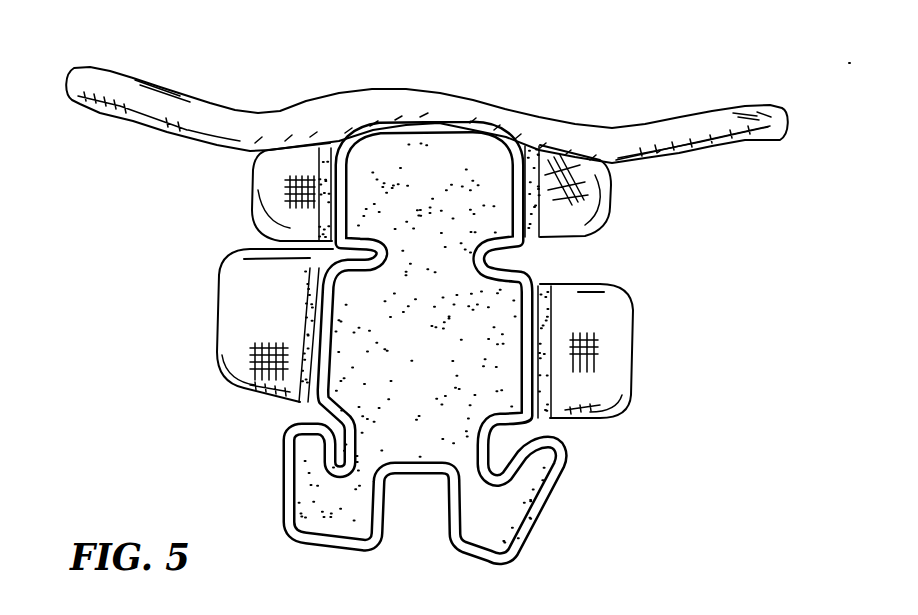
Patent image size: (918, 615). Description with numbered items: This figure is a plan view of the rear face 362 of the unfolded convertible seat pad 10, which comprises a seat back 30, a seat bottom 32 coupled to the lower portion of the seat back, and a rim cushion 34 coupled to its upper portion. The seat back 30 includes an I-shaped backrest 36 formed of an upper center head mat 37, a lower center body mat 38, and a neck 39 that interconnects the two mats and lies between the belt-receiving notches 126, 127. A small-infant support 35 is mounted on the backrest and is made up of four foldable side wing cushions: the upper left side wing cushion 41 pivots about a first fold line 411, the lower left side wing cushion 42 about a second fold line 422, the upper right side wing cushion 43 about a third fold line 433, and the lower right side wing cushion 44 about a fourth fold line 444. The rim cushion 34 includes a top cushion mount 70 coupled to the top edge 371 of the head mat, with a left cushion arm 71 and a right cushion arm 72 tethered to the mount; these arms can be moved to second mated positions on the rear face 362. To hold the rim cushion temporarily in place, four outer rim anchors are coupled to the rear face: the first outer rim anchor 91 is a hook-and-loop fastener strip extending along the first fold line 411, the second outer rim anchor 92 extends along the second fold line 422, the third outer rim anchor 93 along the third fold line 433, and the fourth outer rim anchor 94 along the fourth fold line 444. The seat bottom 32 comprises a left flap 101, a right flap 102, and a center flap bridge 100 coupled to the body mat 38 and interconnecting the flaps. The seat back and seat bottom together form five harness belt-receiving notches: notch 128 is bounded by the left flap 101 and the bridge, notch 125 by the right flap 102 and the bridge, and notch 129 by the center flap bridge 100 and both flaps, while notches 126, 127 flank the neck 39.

The convertible seat pad 10 is at (612, 97).
The seat back 30 is at (691, 160).
The seat bottom 32 is at (691, 426).
The rim cushion 34 is at (722, 110).
The small-infant support 35 is at (578, 312).
The backrest 36 is at (419, 149).
The upper center head mat 37 is at (444, 180).
The lower center body mat 38 is at (431, 354).
The neck 39 is at (446, 263).
The upper left side wing cushion 41 is at (607, 213).
The lower left side wing cushion 42 is at (627, 380).
The upper right side wing cushion 43 is at (260, 183).
The lower right side wing cushion 44 is at (240, 297).
The top cushion mount 70 is at (363, 107).
The left cushion arm 71 is at (649, 133).
The right cushion arm 72 is at (163, 103).
The first outer rim anchor 91 is at (540, 210).
The second outer rim anchor 92 is at (553, 323).
The third outer rim anchor 93 is at (329, 103).
The fourth outer rim anchor 94 is at (300, 340).
The center flap bridge 100 is at (400, 448).
The left flap 101 is at (527, 503).
The right flap 102 is at (303, 468).
The harness-receiving notch 125 is at (547, 433).
The belt-receiving notch 126 is at (507, 270).
The belt-receiving notch 127 is at (335, 249).
The harness-receiving notch 128 is at (347, 427).
The harness-receiving notch 129 is at (453, 517).
The rear face 362 is at (500, 517).
The top edge 371 is at (393, 123).
The first fold line 411 is at (525, 210).
The second fold line 422 is at (573, 413).
The third fold line 433 is at (318, 210).
The fourth fold line 444 is at (292, 398).